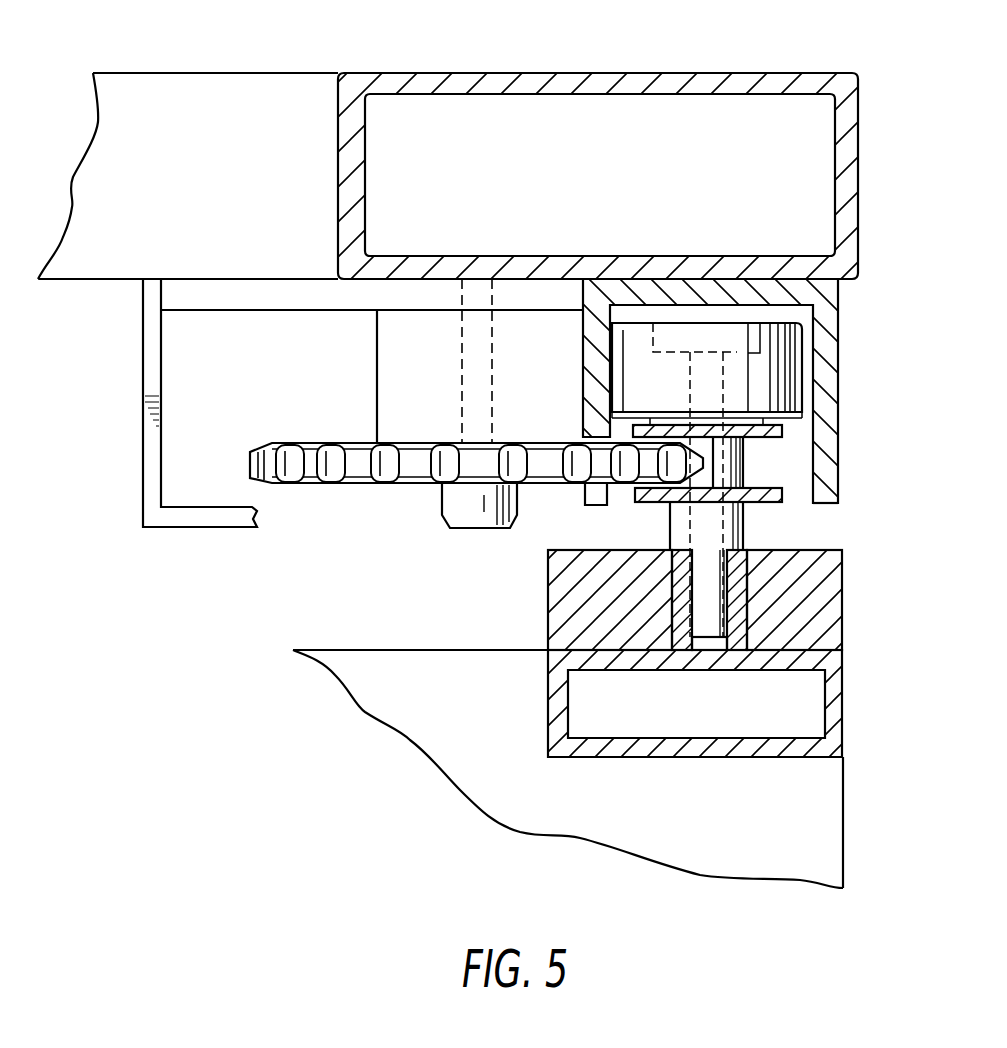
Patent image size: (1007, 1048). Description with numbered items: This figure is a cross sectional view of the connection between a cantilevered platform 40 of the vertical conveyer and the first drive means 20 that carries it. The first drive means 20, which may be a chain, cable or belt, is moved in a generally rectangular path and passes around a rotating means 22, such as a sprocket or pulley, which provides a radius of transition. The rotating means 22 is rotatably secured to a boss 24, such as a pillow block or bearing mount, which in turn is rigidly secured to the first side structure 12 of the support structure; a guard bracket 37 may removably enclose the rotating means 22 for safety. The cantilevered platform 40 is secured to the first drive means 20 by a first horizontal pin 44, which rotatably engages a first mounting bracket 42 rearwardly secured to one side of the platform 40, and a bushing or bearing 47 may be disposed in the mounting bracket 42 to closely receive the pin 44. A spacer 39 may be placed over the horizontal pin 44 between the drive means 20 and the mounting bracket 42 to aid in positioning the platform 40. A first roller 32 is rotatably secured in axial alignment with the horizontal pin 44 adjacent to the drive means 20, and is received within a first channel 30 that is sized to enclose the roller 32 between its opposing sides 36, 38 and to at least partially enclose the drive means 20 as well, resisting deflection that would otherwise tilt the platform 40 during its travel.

The first side structure 12 is at (604, 73).
The first drive means 20 is at (743, 465).
The rotating means 22 is at (290, 444).
The boss 24 is at (377, 378).
The first channel 30 is at (839, 406).
The first roller 32 is at (802, 367).
The side of channel 36 is at (612, 507).
The guard bracket 37 is at (140, 311).
The side of channel 38 is at (822, 478).
The spacer 39 is at (743, 527).
The cantilevered platform 40 is at (410, 650).
The first mounting bracket 42 is at (823, 620).
The first horizontal pin 44 is at (712, 637).
The bushing or bearing 47 is at (747, 592).